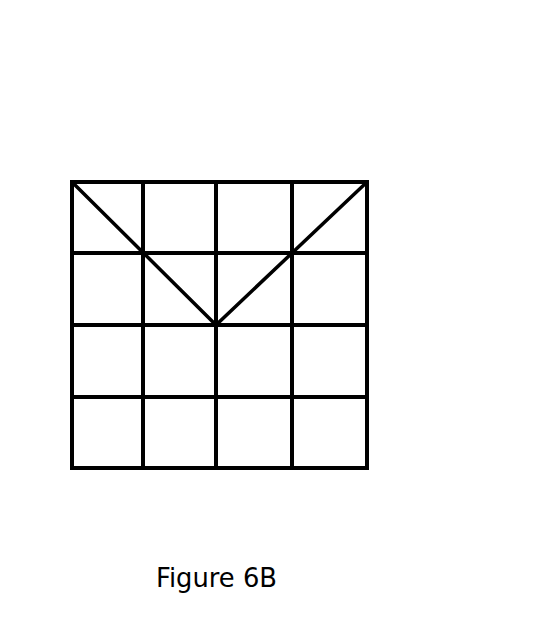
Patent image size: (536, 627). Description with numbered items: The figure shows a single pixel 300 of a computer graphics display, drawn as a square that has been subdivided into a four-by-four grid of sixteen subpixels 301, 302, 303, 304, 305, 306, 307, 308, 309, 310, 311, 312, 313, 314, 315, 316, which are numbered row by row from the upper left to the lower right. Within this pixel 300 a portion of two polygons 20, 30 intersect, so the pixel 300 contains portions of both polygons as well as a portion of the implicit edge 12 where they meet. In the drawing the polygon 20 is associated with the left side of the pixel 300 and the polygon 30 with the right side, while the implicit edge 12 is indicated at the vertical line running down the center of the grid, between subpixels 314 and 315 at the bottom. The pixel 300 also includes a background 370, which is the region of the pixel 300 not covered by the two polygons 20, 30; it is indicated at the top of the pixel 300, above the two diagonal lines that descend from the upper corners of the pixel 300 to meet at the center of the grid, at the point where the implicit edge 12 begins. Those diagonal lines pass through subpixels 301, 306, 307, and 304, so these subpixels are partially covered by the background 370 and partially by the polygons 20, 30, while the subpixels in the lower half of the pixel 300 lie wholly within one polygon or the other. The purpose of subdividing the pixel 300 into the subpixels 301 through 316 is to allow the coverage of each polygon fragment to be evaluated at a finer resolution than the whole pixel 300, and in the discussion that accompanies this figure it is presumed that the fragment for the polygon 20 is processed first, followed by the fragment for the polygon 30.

The pixel 300 is at (240, 122).
The background 370 is at (217, 182).
The polygon 20 is at (70, 255).
The polygon 30 is at (369, 272).
The implicit edge 12 is at (218, 450).
The subpixel 301 is at (107, 217).
The subpixel 302 is at (179, 217).
The subpixel 303 is at (254, 217).
The subpixel 304 is at (329, 217).
The subpixel 305 is at (107, 289).
The subpixel 306 is at (179, 289).
The subpixel 307 is at (254, 289).
The subpixel 308 is at (329, 289).
The subpixel 309 is at (107, 361).
The subpixel 310 is at (179, 361).
The subpixel 311 is at (254, 361).
The subpixel 312 is at (329, 361).
The subpixel 313 is at (107, 432).
The subpixel 314 is at (179, 432).
The subpixel 315 is at (254, 432).
The subpixel 316 is at (329, 432).